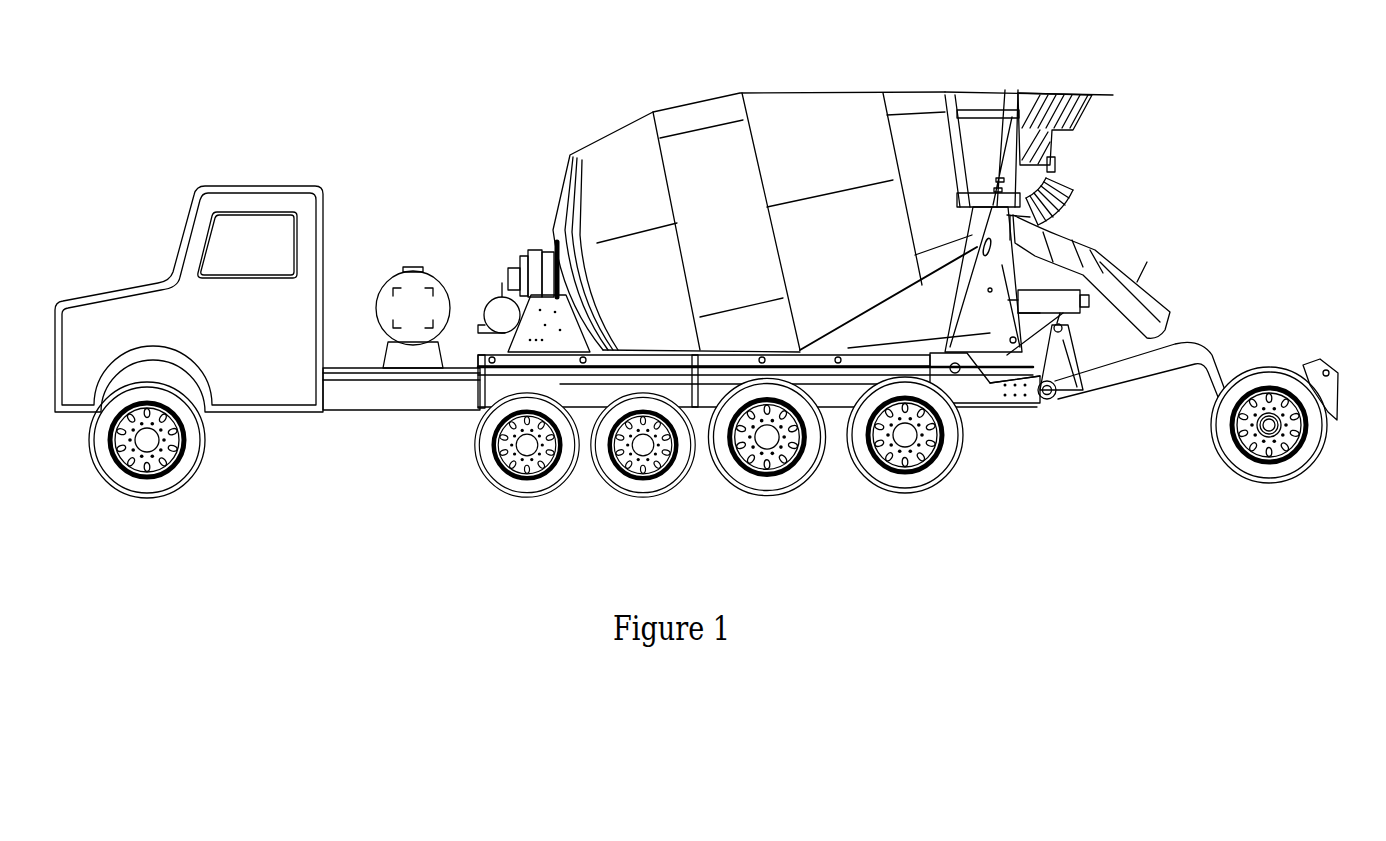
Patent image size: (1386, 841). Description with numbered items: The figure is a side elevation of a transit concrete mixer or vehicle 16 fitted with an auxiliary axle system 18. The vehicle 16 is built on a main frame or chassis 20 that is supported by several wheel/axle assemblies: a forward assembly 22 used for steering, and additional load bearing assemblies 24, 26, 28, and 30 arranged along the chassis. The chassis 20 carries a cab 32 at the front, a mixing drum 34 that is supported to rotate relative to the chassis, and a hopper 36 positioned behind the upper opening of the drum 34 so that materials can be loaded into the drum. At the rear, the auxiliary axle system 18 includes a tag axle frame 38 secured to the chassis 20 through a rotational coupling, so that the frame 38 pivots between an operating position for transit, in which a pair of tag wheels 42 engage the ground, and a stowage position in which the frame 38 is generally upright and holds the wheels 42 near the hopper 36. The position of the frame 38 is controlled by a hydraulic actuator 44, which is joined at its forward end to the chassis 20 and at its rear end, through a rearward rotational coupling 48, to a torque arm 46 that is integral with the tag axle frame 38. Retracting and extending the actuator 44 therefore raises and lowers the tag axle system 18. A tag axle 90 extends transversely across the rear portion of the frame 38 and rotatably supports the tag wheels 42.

The vehicle 16 is at (214, 62).
The auxiliary axle system 18 is at (1255, 212).
The chassis 20 is at (381, 397).
The forward assembly 22 is at (130, 490).
The load bearing assembly 24 is at (538, 485).
The load bearing assembly 26 is at (658, 487).
The load bearing assembly 28 is at (790, 480).
The load bearing assembly 30 is at (930, 473).
The cab 32 is at (149, 300).
The mixing drum 34 is at (793, 104).
The hopper 36 is at (1097, 105).
The tag axle frame 38 is at (1122, 377).
The tag wheels 42 is at (1302, 463).
The hydraulic actuator 44 is at (1033, 372).
The torque arm 46 is at (1070, 360).
The rearward rotational coupling 48 is at (1070, 329).
The tag axle 90 is at (1263, 433).